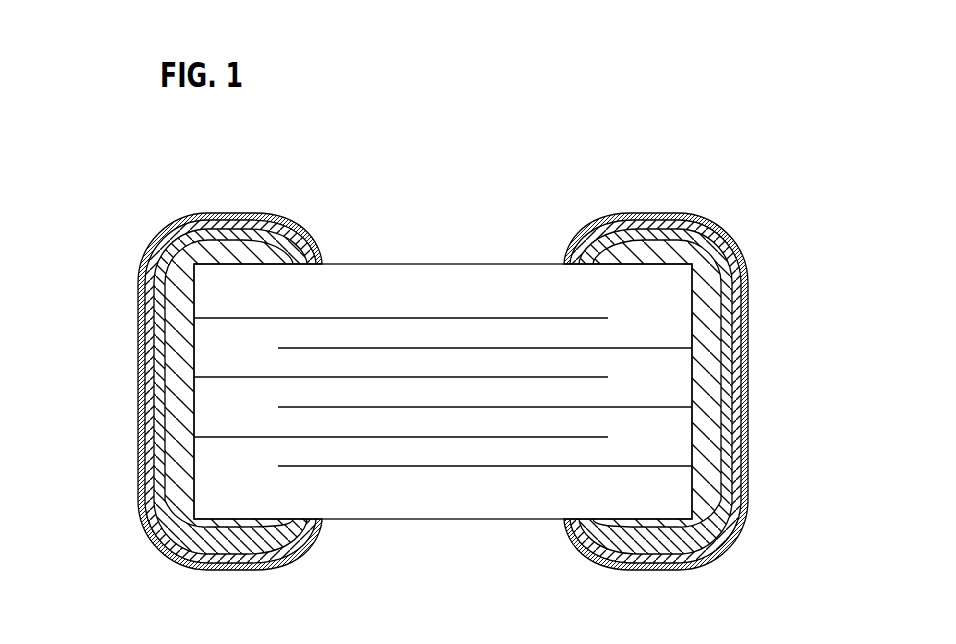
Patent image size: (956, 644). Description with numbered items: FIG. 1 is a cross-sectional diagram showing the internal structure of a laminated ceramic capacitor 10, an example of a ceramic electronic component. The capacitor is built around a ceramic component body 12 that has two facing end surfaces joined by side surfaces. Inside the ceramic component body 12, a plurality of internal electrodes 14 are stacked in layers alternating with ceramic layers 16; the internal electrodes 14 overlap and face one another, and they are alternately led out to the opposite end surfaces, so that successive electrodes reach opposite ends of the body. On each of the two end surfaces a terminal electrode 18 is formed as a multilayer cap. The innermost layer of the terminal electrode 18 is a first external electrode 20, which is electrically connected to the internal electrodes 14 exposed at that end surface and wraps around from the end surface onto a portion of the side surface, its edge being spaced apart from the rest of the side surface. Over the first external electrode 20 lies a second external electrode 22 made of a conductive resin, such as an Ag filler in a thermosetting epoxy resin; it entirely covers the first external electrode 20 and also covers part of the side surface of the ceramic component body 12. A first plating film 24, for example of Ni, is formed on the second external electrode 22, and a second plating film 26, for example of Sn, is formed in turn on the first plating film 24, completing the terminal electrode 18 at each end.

The laminated ceramic capacitor 10 is at (131, 168).
The ceramic component body 12 is at (491, 265).
The internal electrodes 14 is at (400, 407).
The ceramic layers 16 is at (493, 392).
The terminal electrode 18 is at (163, 246).
The first external electrode 20 is at (185, 320).
The second external electrode 22 is at (161, 367).
The first plating film 24 is at (150, 413).
The second plating film 26 is at (142, 460).